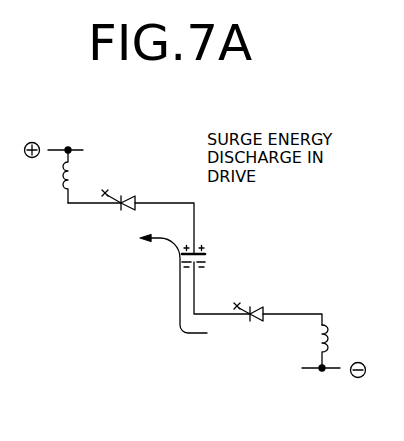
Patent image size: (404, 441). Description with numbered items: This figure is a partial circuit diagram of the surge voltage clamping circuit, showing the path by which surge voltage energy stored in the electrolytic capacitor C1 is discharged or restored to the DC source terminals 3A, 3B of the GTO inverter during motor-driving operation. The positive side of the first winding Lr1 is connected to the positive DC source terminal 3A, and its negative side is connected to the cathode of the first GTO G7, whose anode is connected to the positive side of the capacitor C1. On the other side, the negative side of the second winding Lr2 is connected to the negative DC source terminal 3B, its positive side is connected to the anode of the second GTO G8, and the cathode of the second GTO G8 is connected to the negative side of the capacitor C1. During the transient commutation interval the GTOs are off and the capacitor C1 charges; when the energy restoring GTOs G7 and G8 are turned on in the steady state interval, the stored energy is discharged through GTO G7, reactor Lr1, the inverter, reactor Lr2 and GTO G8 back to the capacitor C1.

The DC source terminal 3A is at (76, 144).
The DC source terminal 3B is at (334, 386).
The first winding Lr1 is at (74, 172).
The second winding Lr2 is at (333, 335).
The first GTO G7 is at (128, 199).
The second GTO G8 is at (256, 307).
The electrolytic capacitor C1 is at (205, 258).